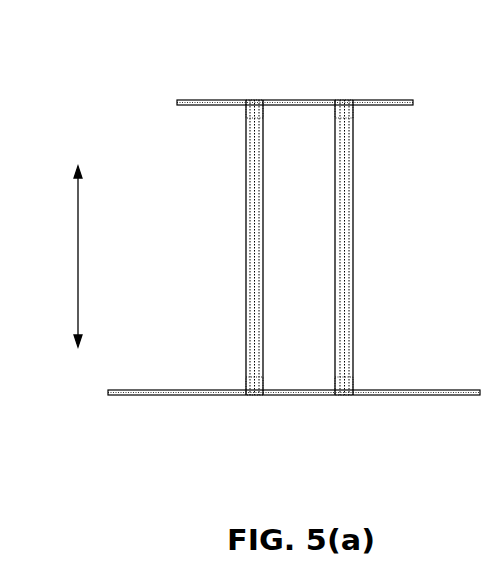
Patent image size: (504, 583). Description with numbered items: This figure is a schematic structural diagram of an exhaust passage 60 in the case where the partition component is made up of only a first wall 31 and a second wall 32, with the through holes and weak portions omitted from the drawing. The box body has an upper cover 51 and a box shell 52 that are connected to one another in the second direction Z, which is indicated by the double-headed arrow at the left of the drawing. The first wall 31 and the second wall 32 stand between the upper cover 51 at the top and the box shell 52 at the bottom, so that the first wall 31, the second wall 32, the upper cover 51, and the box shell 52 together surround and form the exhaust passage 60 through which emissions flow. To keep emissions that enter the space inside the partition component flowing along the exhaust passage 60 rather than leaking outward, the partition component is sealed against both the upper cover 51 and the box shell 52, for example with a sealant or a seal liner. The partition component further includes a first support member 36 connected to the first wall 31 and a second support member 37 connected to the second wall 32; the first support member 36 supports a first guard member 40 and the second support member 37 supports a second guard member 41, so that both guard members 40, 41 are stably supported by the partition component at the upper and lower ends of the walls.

The first wall 31 is at (250, 250).
The second wall 32 is at (345, 250).
The first support member 36 is at (262, 118).
The second support member 37 is at (347, 110).
The first guard member 40 is at (258, 305).
The second guard member 41 is at (345, 302).
The upper cover 51 is at (303, 100).
The box shell 52 is at (300, 393).
The exhaust passage 60 is at (313, 248).
The second direction Z is at (61, 256).